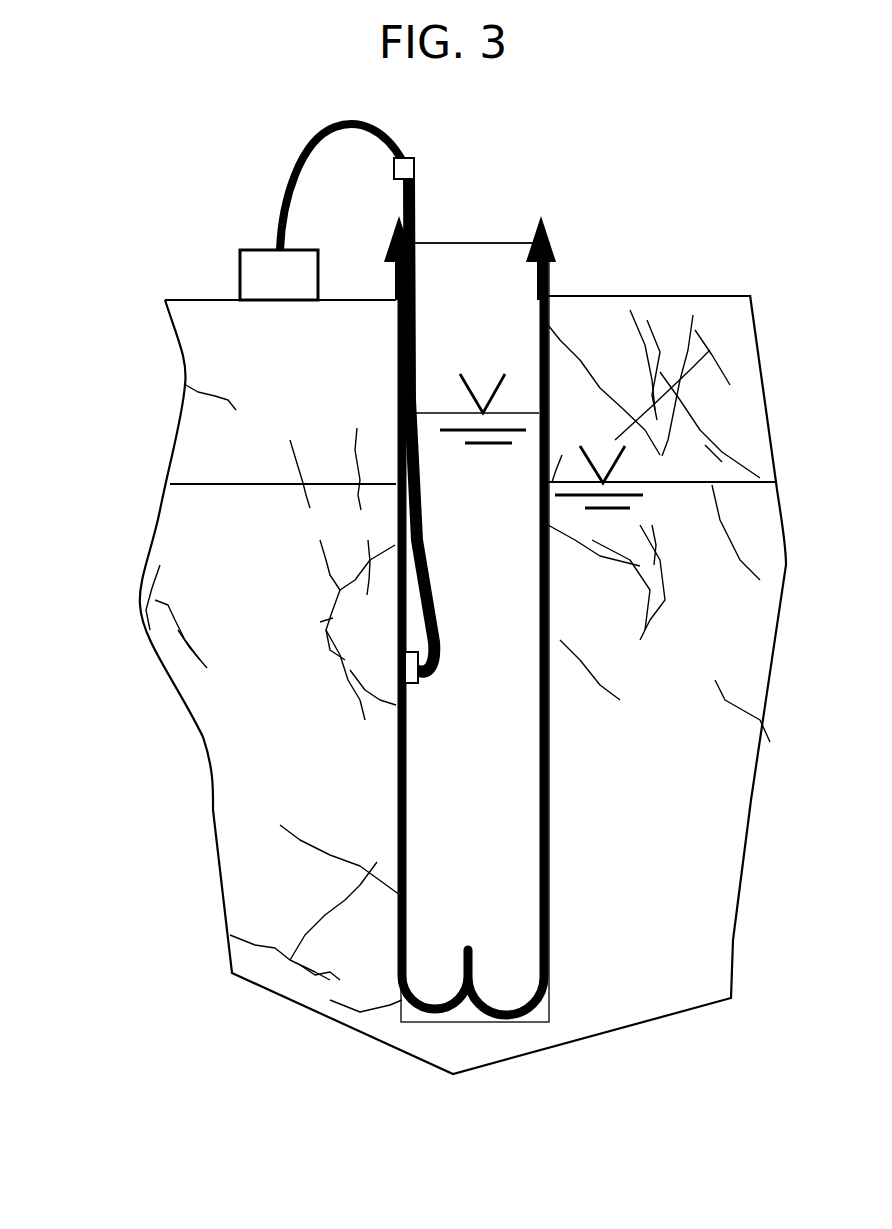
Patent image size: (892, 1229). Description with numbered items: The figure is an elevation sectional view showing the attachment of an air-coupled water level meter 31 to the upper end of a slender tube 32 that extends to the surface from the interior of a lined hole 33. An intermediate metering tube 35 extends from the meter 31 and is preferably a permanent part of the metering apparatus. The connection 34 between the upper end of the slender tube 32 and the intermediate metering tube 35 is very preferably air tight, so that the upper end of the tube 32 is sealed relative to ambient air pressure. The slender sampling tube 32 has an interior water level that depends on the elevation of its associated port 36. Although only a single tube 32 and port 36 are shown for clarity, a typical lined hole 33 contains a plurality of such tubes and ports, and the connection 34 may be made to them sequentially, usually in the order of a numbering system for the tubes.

The air-coupled water level meter 31 is at (267, 262).
The slender tube 32 is at (420, 336).
The lined hole 33 is at (400, 752).
The connection 34 is at (410, 160).
The intermediate metering tube 35 is at (352, 143).
The port 36 is at (398, 670).